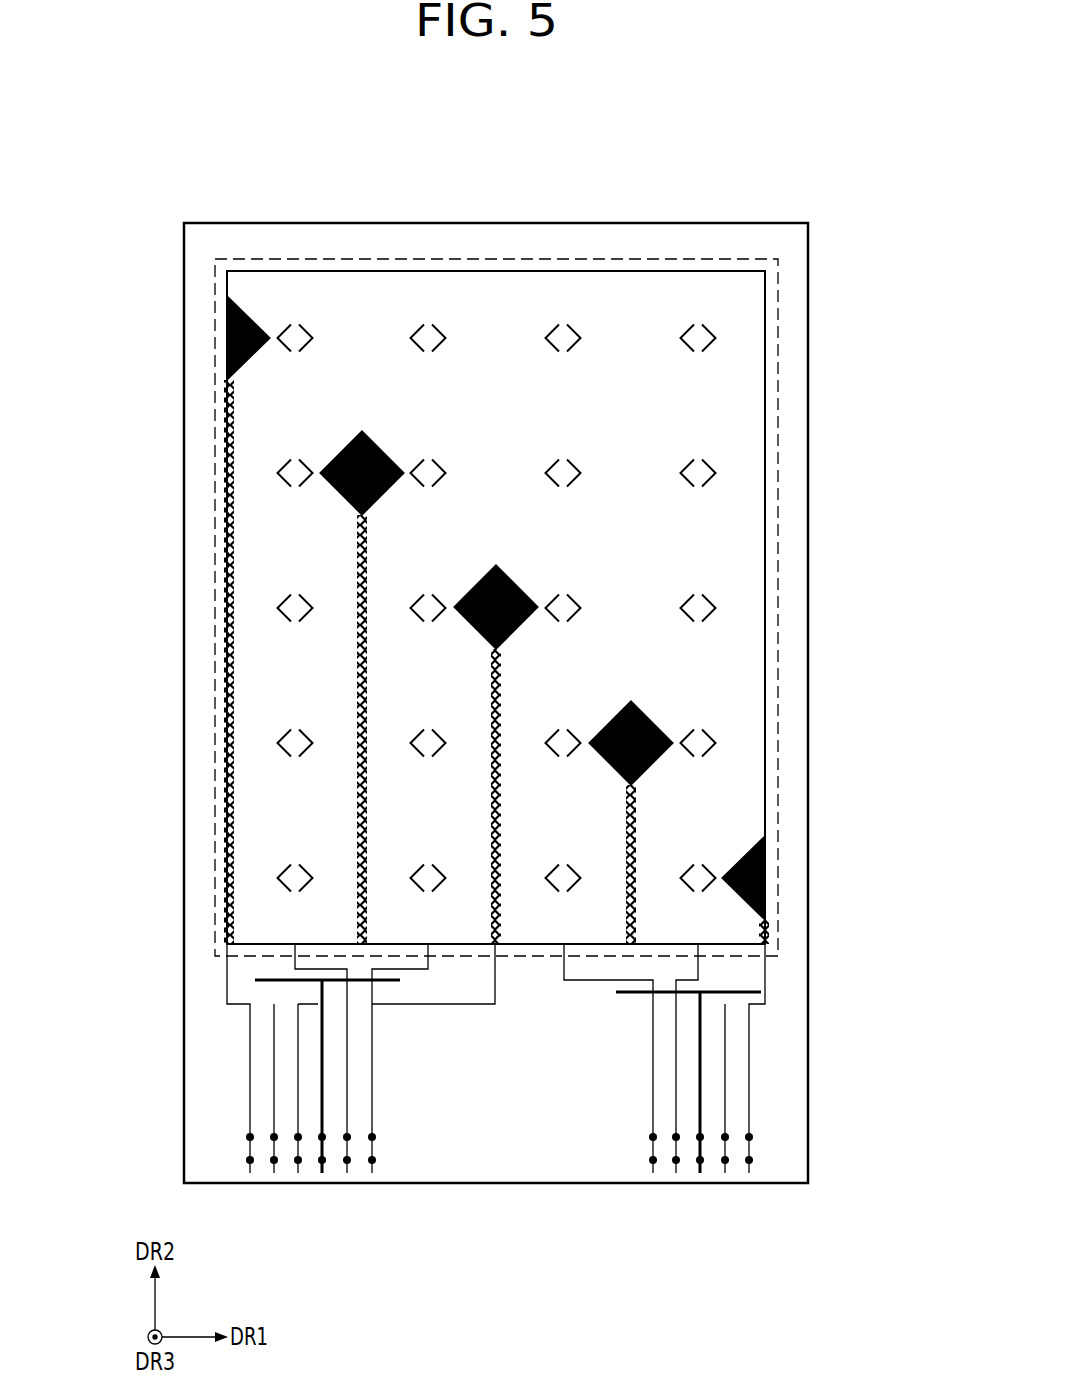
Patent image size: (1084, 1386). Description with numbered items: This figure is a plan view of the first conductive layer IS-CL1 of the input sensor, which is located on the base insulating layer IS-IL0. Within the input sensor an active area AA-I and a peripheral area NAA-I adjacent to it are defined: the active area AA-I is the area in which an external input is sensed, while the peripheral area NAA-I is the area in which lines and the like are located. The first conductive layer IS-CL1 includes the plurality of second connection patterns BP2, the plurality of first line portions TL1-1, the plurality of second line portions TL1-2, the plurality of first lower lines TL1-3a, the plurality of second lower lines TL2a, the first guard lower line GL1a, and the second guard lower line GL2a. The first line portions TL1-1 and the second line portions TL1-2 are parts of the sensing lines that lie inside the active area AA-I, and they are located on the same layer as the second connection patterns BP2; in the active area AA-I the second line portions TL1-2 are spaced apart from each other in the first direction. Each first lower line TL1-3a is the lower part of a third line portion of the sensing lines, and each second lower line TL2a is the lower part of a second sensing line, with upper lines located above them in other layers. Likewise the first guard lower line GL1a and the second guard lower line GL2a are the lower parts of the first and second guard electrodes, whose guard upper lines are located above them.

The first conductive layer IS-CL1 is at (481, 635).
The base insulating layer IS-IL0 is at (808, 680).
The peripheral area NAA-I is at (794, 516).
The active area AA-I is at (769, 566).
The second connection patterns BP2 is at (708, 328).
The first line portions TL1-1 is at (227, 365).
The second line portions TL1-2 is at (227, 750).
The first lower line TL1-3a is at (227, 963).
The second lower line TL2a is at (295, 962).
The second guard lower line GL2a is at (292, 982).
The first guard lower line GL1a is at (323, 1068).